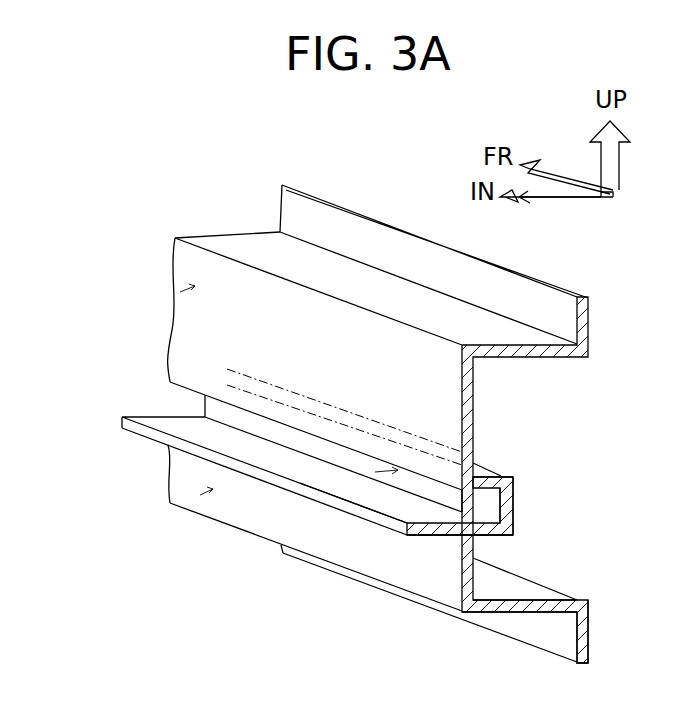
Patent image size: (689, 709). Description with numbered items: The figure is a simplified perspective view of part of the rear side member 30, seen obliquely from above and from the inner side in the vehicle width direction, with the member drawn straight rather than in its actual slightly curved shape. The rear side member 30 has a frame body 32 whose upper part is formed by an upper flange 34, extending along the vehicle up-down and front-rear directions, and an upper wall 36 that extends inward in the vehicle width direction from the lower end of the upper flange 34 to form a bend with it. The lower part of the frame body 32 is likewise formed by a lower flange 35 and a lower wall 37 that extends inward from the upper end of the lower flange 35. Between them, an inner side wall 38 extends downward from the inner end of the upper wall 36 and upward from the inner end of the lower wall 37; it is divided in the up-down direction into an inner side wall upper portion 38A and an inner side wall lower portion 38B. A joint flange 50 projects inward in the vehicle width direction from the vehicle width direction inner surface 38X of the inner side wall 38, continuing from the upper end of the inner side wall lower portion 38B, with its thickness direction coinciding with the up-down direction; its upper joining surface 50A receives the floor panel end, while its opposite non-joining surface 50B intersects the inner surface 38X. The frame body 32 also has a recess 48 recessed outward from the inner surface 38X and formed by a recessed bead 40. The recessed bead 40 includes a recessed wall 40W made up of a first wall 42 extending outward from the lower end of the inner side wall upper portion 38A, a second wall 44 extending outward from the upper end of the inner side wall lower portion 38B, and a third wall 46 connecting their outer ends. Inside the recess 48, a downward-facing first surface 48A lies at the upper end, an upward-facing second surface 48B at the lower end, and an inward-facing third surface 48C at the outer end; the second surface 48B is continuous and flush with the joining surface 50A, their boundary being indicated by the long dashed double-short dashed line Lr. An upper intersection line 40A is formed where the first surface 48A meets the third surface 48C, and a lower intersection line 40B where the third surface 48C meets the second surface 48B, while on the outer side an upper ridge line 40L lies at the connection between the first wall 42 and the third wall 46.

The rear side member 30 is at (448, 168).
The frame body 32 is at (400, 215).
The upper flange 34 is at (337, 225).
The upper wall 36 is at (253, 247).
The inner side wall 38 is at (172, 287).
The inner side wall upper portion 38A is at (197, 317).
The inner side wall lower portion 38B is at (178, 503).
The vehicle width direction inner surface 38X is at (227, 517).
The recessed bead 40 is at (373, 466).
The upper intersection line 40A is at (212, 403).
The lower intersection line 40B is at (243, 420).
The recessed wall 40W is at (284, 432).
The upper ridge line 40L is at (490, 472).
The long dashed double-short dashed line Lr is at (320, 445).
The first wall 42 is at (480, 467).
The second wall 44 is at (483, 538).
The third wall 46 is at (516, 513).
The recess 48 is at (400, 525).
The first surface 48A is at (513, 492).
The second surface 48B is at (502, 537).
The third surface 48C is at (522, 507).
The joint flange 50 is at (420, 538).
The joining surface 50A is at (340, 487).
The non-joining surface 50B is at (443, 536).
The lower wall 37 is at (497, 615).
The lower flange 35 is at (547, 637).